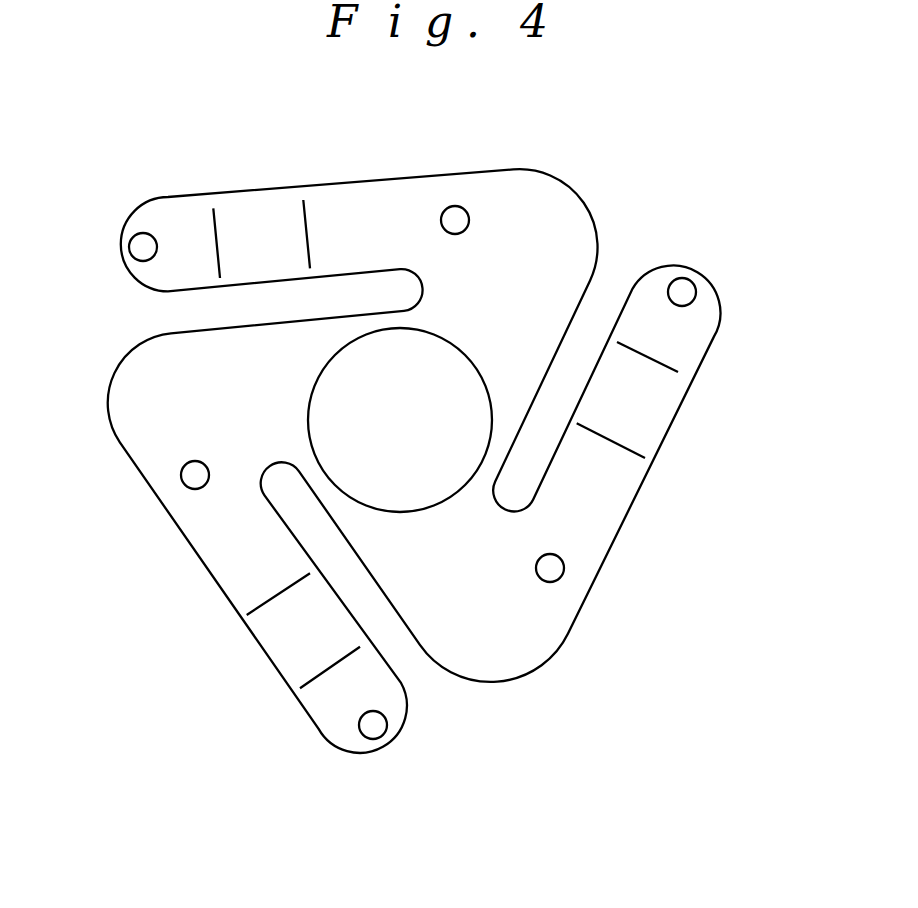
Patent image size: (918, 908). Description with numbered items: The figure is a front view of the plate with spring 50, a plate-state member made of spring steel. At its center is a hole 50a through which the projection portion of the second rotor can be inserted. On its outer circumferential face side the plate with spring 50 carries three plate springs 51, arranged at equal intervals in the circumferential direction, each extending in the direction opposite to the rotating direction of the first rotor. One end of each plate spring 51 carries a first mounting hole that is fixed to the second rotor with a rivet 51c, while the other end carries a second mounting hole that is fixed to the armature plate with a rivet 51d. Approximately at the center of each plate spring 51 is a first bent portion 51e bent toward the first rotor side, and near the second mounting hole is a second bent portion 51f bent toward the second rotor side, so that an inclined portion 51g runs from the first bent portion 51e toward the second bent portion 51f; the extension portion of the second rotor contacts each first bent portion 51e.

The plate with spring 50 is at (543, 668).
The hole 50a is at (307, 427).
The plate spring 51 is at (340, 182).
The rivet 51c is at (455, 220).
The rivet 51d is at (143, 247).
The first bent portion 51e is at (642, 450).
The second bent portion 51f is at (686, 360).
The inclined portion 51g is at (653, 413).